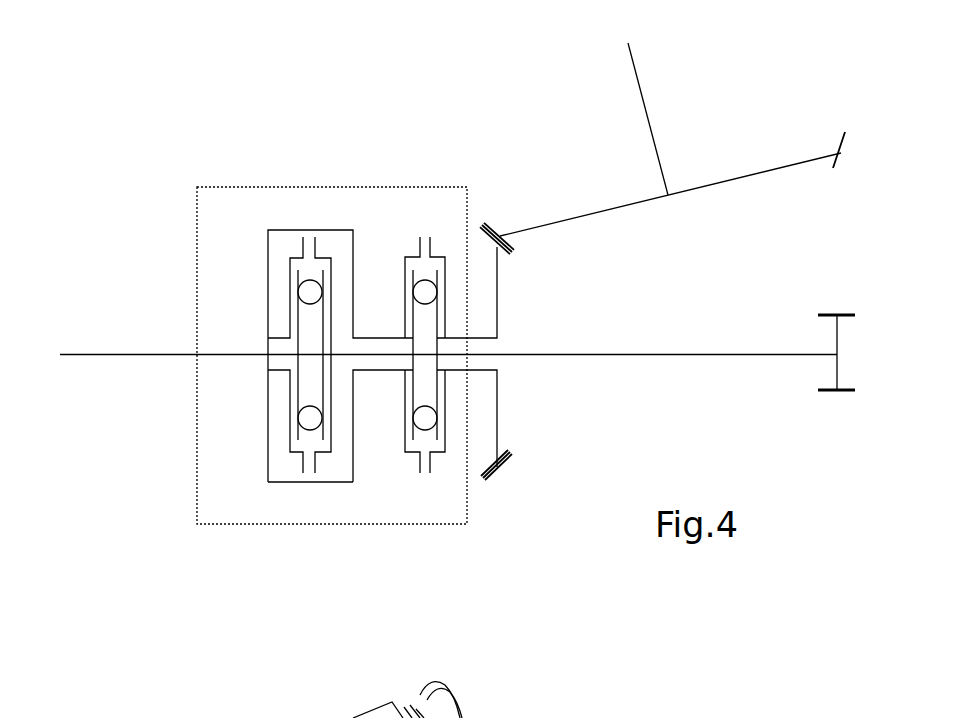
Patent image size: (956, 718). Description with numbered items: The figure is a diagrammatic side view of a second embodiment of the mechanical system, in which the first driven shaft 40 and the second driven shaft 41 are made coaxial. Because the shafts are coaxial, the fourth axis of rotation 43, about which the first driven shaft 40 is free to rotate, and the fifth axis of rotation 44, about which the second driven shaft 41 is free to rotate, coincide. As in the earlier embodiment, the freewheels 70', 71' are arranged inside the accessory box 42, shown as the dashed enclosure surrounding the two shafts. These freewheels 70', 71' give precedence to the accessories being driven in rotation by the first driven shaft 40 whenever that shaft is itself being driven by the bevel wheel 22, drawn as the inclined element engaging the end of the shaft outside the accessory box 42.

The bevel wheel 22 is at (752, 176).
The first driven shaft 40 is at (476, 337).
The second driven shaft 41 is at (592, 354).
The accessory box 42 is at (255, 203).
The fourth axis of rotation 43 is at (477, 366).
The fifth axis of rotation 44 is at (628, 366).
The freewheel 70' is at (466, 283).
The freewheel 71' is at (340, 290).